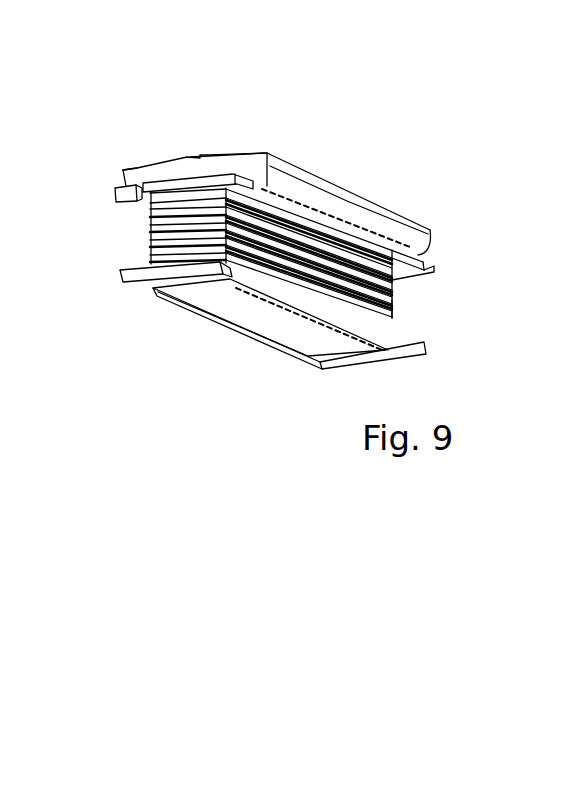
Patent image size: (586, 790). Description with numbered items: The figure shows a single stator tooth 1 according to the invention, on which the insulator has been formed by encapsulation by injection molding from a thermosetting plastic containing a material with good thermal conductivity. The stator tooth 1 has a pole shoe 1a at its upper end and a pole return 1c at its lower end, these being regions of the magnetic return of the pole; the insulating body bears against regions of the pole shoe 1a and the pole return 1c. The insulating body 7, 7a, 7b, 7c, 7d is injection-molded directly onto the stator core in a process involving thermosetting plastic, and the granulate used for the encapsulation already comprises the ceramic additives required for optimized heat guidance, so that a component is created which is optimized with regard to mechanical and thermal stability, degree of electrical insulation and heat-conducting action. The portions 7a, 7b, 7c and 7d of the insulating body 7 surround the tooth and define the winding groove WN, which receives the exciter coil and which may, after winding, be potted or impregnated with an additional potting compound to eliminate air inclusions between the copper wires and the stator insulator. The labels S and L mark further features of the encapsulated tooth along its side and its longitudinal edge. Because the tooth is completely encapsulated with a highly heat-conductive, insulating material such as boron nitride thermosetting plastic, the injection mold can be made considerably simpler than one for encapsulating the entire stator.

The stator tooth 1 is at (113, 108).
The pole shoe 1a is at (210, 167).
The pole return 1c is at (267, 315).
The corner / step of top plate S is at (130, 168).
The longitudinal lip of top plate L is at (338, 210).
The insulating body 7 is at (298, 269).
The insulating body 7a is at (155, 237).
The insulating body 7b is at (115, 190).
The insulating body 7c is at (133, 278).
The insulating body 7d is at (397, 312).
The winding groove WN is at (400, 313).